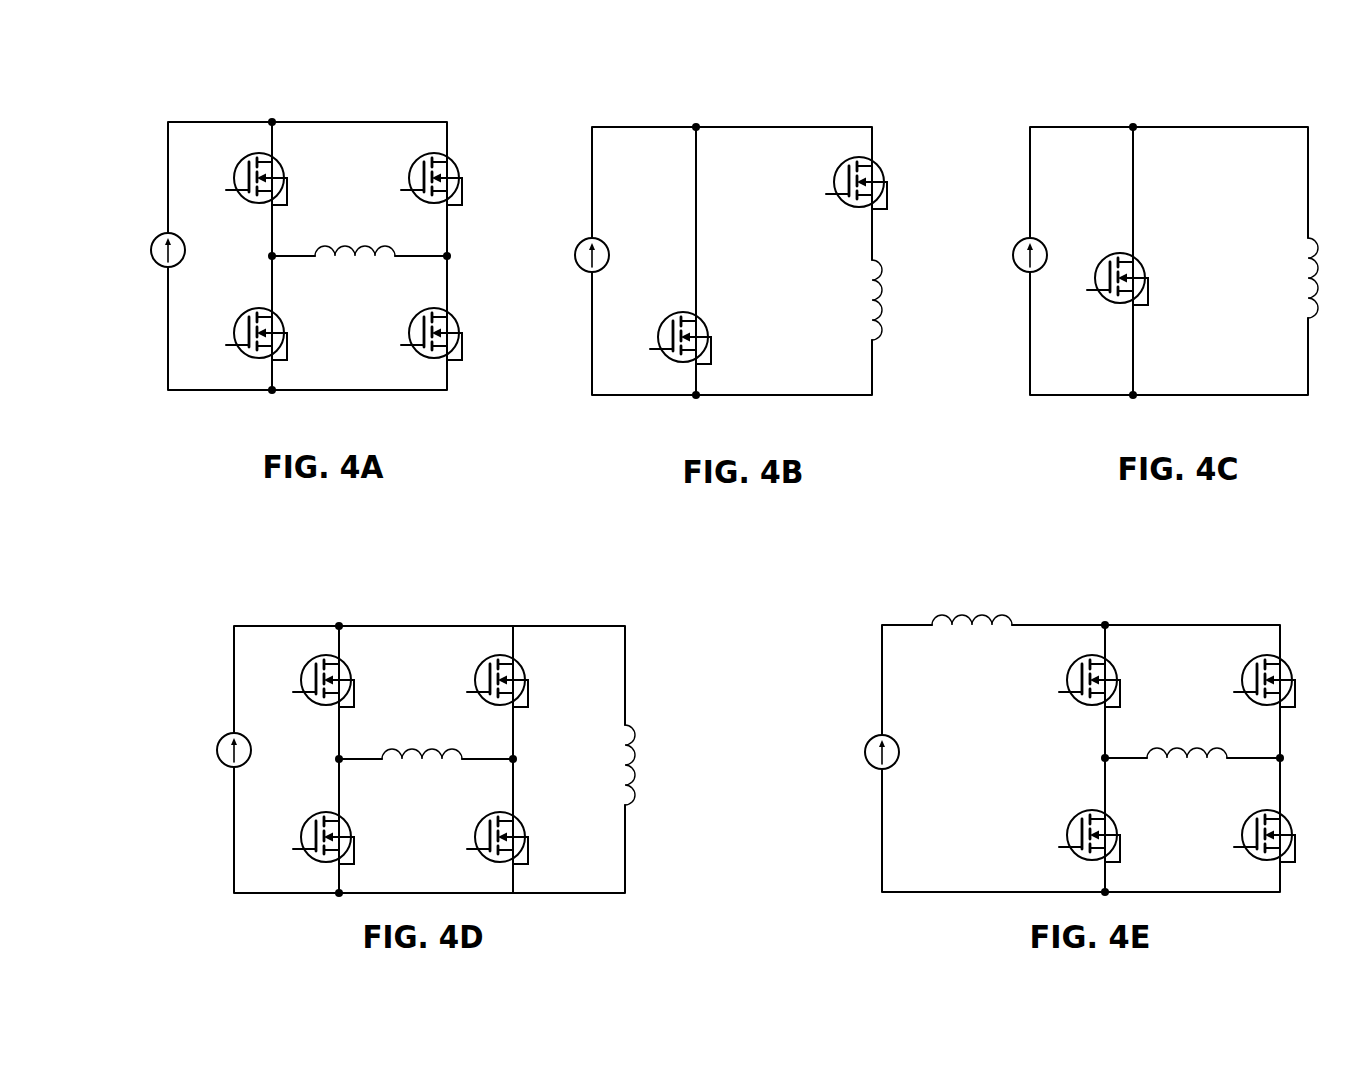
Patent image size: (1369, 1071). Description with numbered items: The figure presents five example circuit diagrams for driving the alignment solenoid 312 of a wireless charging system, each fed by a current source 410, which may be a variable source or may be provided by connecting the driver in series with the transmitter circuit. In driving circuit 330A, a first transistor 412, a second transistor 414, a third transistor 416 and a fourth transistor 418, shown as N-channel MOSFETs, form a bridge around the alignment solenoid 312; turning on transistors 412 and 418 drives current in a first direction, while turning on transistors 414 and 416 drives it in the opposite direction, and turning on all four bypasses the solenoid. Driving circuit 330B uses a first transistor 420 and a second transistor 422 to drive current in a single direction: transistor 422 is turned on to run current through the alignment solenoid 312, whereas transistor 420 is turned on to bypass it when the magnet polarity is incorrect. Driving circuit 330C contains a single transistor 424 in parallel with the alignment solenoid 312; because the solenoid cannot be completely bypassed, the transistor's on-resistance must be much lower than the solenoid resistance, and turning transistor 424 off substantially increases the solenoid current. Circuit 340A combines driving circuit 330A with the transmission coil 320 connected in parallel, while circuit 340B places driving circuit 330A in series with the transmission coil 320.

In FIG. 4A, the driving circuit 330A is at (306, 210).
In FIG. 4B, the driving circuit 330B is at (731, 212).
In FIG. 4C, the driving circuit 330C is at (1165, 213).
In FIG. 4D, the circuit 340A is at (426, 713).
In FIG. 4E, the circuit 340B is at (1080, 715).
In FIG. 4A, the current source 410 is at (184, 243).
In FIG. 4B, the current source 410 is at (606, 248).
In FIG. 4C, the current source 410 is at (1044, 248).
In FIG. 4D, the current source 410 is at (248, 743).
In FIG. 4E, the current source 410 is at (897, 744).
In FIG. 4A, the first transistor 412 is at (256, 167).
In FIG. 4D, the first transistor 412 is at (323, 669).
In FIG. 4E, the first transistor 412 is at (1089, 668).
In FIG. 4A, the second transistor 414 is at (431, 167).
In FIG. 4D, the second transistor 414 is at (497, 669).
In FIG. 4E, the second transistor 414 is at (1264, 668).
In FIG. 4A, the third transistor 416 is at (256, 322).
In FIG. 4D, the third transistor 416 is at (323, 826).
In FIG. 4E, the third transistor 416 is at (1089, 824).
In FIG. 4A, the fourth transistor 418 is at (431, 322).
In FIG. 4D, the fourth transistor 418 is at (497, 826).
In FIG. 4E, the fourth transistor 418 is at (1264, 824).
In FIG. 4B, the first transistor 420 is at (680, 327).
In FIG. 4B, the second transistor 422 is at (856, 172).
In FIG. 4C, the single transistor 424 is at (1117, 268).
In FIG. 4A, the alignment solenoid 312 is at (360, 268).
In FIG. 4B, the alignment solenoid 312 is at (812, 300).
In FIG. 4C, the alignment solenoid 312 is at (1249, 278).
In FIG. 4D, the alignment solenoid 312 is at (426, 772).
In FIG. 4E, the alignment solenoid 312 is at (1192, 771).
In FIG. 4D, the transmission coil 320 is at (584, 765).
In FIG. 4E, the transmission coil 320 is at (975, 638).